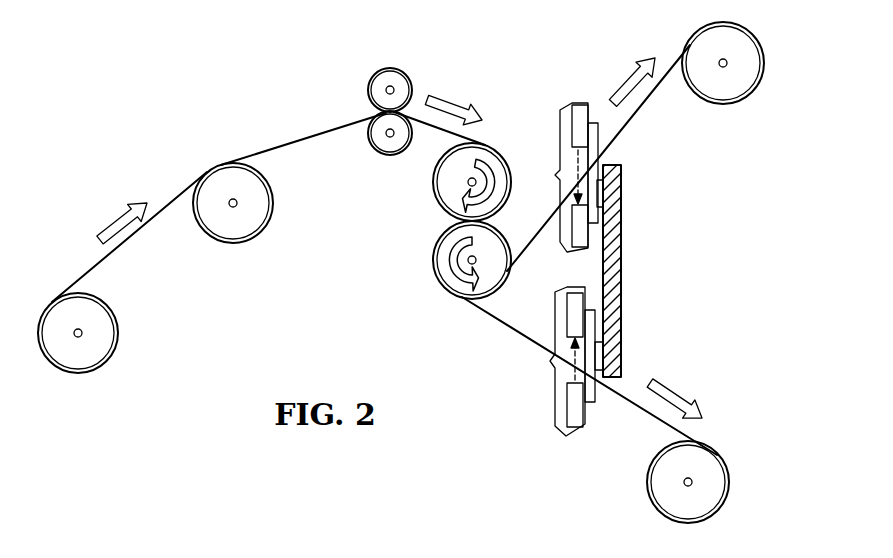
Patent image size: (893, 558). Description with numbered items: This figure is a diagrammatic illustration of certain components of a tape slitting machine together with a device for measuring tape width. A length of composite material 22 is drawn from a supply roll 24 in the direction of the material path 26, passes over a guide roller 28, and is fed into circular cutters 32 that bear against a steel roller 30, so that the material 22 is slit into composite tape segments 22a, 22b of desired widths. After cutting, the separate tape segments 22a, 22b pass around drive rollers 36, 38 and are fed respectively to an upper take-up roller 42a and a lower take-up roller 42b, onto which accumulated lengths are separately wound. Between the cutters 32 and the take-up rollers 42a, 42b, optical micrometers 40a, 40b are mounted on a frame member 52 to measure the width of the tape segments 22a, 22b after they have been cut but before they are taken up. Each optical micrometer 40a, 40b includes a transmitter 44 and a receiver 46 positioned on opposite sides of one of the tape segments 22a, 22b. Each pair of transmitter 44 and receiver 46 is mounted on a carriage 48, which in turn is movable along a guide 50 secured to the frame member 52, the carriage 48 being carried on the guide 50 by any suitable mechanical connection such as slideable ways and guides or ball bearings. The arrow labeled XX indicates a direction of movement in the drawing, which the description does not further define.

The length of composite material 22 is at (297, 140).
The composite tape segment 22a is at (628, 125).
The composite tape segment 22b is at (632, 400).
The supply roll 24 is at (100, 333).
The material path 26 is at (105, 222).
The guide roller 28 is at (237, 230).
The steel roller 30 is at (387, 147).
The circular cutters 32 is at (393, 75).
The drive roller 36 is at (490, 145).
The drive roller 38 is at (443, 268).
The optical micrometer 40a is at (567, 148).
The optical micrometer 40b is at (566, 376).
The upper take-up roller 42a is at (725, 85).
The lower take-up roller 42b is at (703, 467).
The transmitter 44 is at (580, 113).
The receiver 46 is at (575, 250).
The carriage 48 is at (593, 103).
The guide 50 is at (622, 190).
The frame member 52 is at (622, 240).
The cross-machine direction XX is at (632, 67).